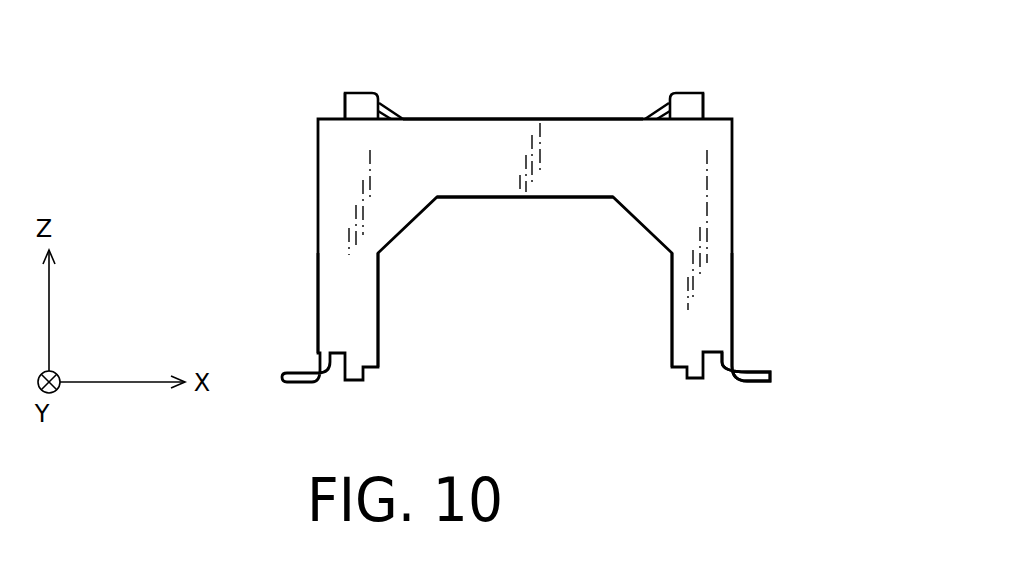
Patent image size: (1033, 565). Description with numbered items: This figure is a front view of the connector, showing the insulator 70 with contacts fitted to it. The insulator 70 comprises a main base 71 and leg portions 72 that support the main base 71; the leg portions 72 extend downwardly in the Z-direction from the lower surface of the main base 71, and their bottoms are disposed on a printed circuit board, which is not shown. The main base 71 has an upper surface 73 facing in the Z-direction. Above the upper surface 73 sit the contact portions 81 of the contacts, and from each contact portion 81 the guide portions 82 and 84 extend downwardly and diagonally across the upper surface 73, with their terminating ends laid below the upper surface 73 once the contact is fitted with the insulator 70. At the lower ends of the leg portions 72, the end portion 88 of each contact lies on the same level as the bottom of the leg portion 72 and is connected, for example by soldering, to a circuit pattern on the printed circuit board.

The insulator 70 is at (738, 228).
The main base 71 is at (472, 198).
The leg portions 72 is at (342, 303).
The upper surface 73 is at (493, 118).
The contact portion 81 is at (364, 92).
The guide portion 82 is at (359, 107).
The guide portion 84 is at (400, 109).
The end portion 88 is at (757, 383).